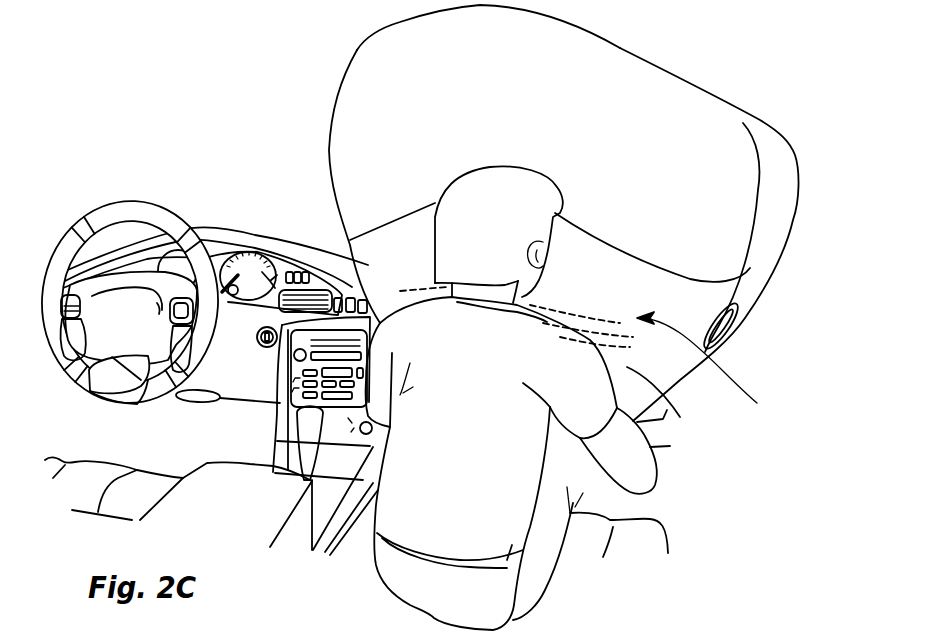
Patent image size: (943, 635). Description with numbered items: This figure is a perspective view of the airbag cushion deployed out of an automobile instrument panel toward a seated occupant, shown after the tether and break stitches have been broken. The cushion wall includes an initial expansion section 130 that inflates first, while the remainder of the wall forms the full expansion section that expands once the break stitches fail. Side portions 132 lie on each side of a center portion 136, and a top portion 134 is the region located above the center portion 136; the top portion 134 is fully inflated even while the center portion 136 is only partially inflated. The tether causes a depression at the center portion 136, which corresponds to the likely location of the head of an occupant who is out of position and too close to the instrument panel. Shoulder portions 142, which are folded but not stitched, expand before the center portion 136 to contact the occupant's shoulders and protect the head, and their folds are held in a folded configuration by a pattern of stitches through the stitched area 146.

The initial expansion section 130 is at (767, 121).
The side portions 132 is at (363, 187).
The top portion 134 is at (585, 57).
The center portion 136 is at (563, 243).
The shoulder portions 142 is at (663, 393).
The stitched area 146 is at (718, 366).